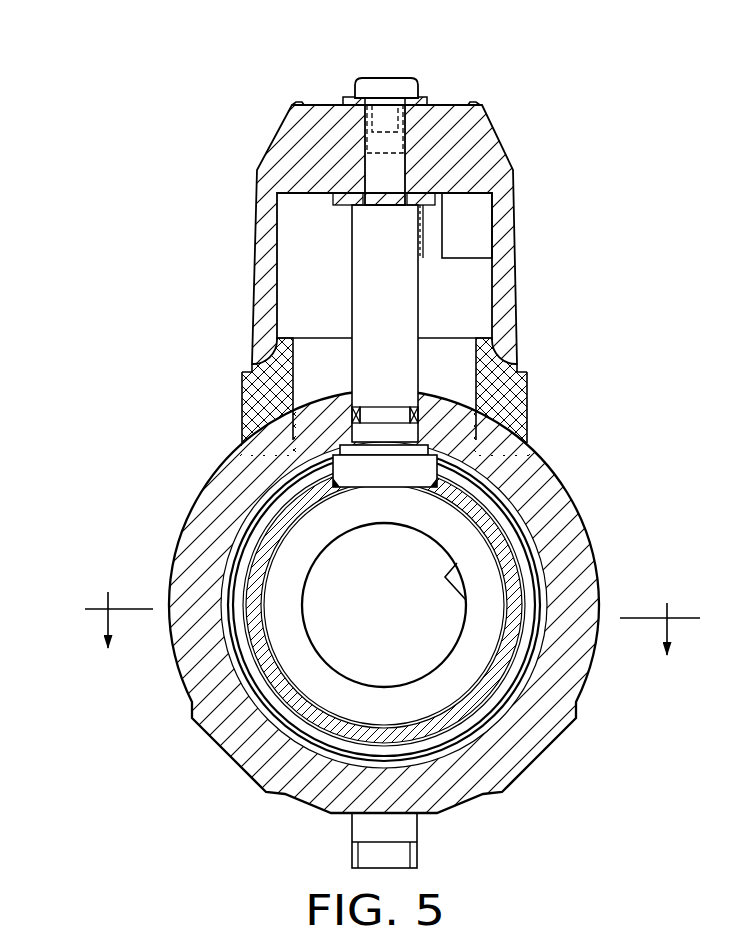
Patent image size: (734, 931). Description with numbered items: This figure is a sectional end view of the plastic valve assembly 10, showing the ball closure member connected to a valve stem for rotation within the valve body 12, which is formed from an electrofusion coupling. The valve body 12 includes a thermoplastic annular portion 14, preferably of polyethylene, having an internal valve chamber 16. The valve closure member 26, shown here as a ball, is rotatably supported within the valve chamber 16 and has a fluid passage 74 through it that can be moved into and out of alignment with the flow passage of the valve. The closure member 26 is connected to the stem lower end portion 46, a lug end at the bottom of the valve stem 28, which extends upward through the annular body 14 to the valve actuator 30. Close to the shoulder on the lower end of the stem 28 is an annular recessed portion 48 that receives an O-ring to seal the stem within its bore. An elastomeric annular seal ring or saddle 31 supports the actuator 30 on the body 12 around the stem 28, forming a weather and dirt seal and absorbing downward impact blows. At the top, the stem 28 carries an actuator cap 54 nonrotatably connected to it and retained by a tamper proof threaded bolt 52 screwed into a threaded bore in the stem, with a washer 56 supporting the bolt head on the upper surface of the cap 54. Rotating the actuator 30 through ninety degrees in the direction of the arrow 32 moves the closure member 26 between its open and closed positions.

The plastic valve assembly 10 is at (360, 443).
The valve body 12 is at (360, 600).
The thermoplastic annular portion 14 is at (372, 624).
The valve chamber 16 is at (447, 605).
The valve closure member 26 is at (379, 605).
The valve stem 28 is at (402, 307).
The valve actuator 30 is at (312, 237).
The annular seal ring or saddle 31 is at (346, 396).
The arrow 32 is at (357, 80).
The stem lower end portion 46 is at (374, 489).
The annular recessed portion 48 is at (385, 395).
The tamper proof threaded bolt 52 is at (378, 90).
The actuator cap 54 is at (311, 234).
The washer 56 is at (347, 62).
The fluid passage 74 is at (466, 602).